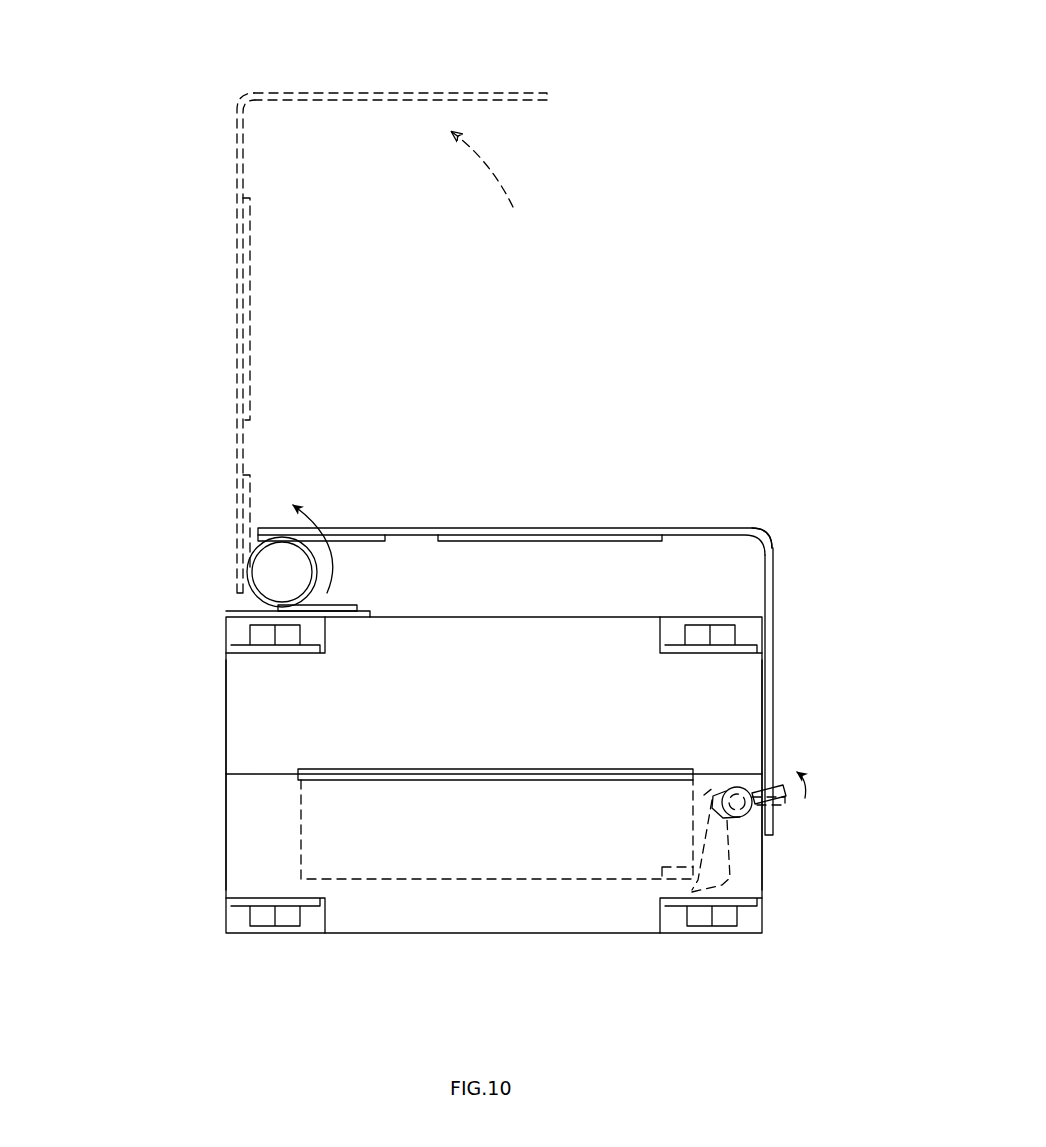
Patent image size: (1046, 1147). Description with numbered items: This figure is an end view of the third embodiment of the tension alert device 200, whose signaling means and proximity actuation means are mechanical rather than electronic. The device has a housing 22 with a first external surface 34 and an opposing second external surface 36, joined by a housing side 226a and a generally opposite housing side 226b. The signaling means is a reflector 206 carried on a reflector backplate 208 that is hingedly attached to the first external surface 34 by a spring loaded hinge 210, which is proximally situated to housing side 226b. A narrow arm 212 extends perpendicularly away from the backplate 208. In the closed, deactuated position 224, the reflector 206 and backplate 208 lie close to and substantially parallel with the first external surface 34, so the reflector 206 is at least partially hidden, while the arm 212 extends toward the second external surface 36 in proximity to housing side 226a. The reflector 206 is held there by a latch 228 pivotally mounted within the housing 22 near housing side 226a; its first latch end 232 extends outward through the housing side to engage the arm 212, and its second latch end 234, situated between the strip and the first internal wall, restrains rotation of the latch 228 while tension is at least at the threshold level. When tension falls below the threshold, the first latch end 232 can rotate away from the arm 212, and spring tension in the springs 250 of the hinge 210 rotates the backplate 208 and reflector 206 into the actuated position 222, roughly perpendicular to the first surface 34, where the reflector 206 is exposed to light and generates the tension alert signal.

The tension alert device 200 is at (700, 163).
The housing 22 is at (257, 842).
The first external surface 34 is at (607, 616).
The second external surface 36 is at (365, 933).
The housing side 226a is at (763, 882).
The housing side 226b is at (227, 702).
The springs 250 is at (252, 597).
The spring loaded hinge 210 is at (250, 497).
The reflector 206 is at (250, 322).
The reflector backplate 208 is at (237, 450).
The arm 212 is at (363, 92).
The deactuated position 224 is at (773, 577).
The actuated position 222 is at (499, 185).
The latch 228 is at (741, 786).
The first latch end 232 is at (785, 803).
The second latch end 234 is at (660, 870).